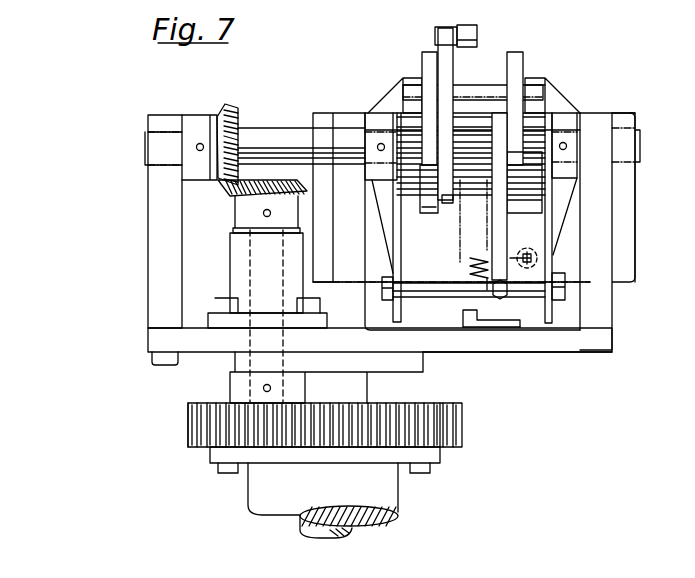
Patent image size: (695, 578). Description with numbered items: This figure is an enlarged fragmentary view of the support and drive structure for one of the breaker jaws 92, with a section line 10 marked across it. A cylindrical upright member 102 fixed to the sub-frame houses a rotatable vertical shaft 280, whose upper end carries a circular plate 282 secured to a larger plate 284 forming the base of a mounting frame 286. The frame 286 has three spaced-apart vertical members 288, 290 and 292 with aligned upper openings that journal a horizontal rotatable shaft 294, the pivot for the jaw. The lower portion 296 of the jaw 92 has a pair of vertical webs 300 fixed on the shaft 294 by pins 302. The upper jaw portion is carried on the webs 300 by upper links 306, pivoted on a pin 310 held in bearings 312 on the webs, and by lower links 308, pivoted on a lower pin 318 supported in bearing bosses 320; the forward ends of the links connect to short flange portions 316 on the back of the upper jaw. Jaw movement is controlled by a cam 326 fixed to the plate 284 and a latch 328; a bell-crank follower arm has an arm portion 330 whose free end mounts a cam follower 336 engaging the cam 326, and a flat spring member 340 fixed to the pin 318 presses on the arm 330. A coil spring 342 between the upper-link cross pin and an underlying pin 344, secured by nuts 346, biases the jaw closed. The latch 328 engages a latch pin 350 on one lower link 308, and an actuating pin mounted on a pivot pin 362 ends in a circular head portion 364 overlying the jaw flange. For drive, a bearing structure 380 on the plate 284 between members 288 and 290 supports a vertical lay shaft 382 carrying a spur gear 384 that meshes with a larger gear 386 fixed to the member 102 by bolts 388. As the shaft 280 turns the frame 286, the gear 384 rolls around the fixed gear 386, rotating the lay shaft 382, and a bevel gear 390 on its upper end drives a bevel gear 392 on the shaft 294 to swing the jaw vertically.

The section line 10 is at (452, 9).
The breaker jaw 92 is at (642, 78).
The cylindrical upright member 102 is at (398, 495).
The vertical shaft 280 is at (312, 532).
The circular plate 282 is at (402, 372).
The plate 284 is at (530, 352).
The mounting frame 286 is at (146, 323).
The vertical member 288 is at (148, 250).
The vertical member 290 is at (356, 272).
The vertical member 292 is at (612, 300).
The rotatable shaft 294 is at (290, 128).
The lower portion of the breaker jaw 296 is at (331, 292).
The webs 300 is at (397, 322).
The pins 302 is at (378, 147).
The upper links 306 is at (422, 52).
The lower links 308 is at (428, 213).
The pin 310 is at (498, 97).
The bearings 312 is at (413, 113).
The flange portions 316 is at (415, 78).
The pin 318 is at (468, 205).
The bearing bosses 320 is at (403, 192).
The cam 326 is at (470, 327).
The latch 328 is at (485, 233).
The arm portion 330 is at (470, 30).
The cam follower 336 is at (477, 35).
The flat spring member 340 is at (453, 65).
The coil spring 342 is at (470, 269).
The pin 344 is at (458, 300).
The nuts 346 is at (565, 300).
The latch pin 350 is at (491, 318).
The pivot pin 362 is at (508, 298).
The circular head portion 364 is at (540, 258).
The bearing structure 380 is at (232, 262).
The lay shaft 382 is at (248, 243).
The spur gear 384 is at (188, 422).
The gear 386 is at (462, 428).
The bolts 388 is at (430, 470).
The bevel gear 390 is at (232, 189).
The bevel gear 392 is at (248, 94).